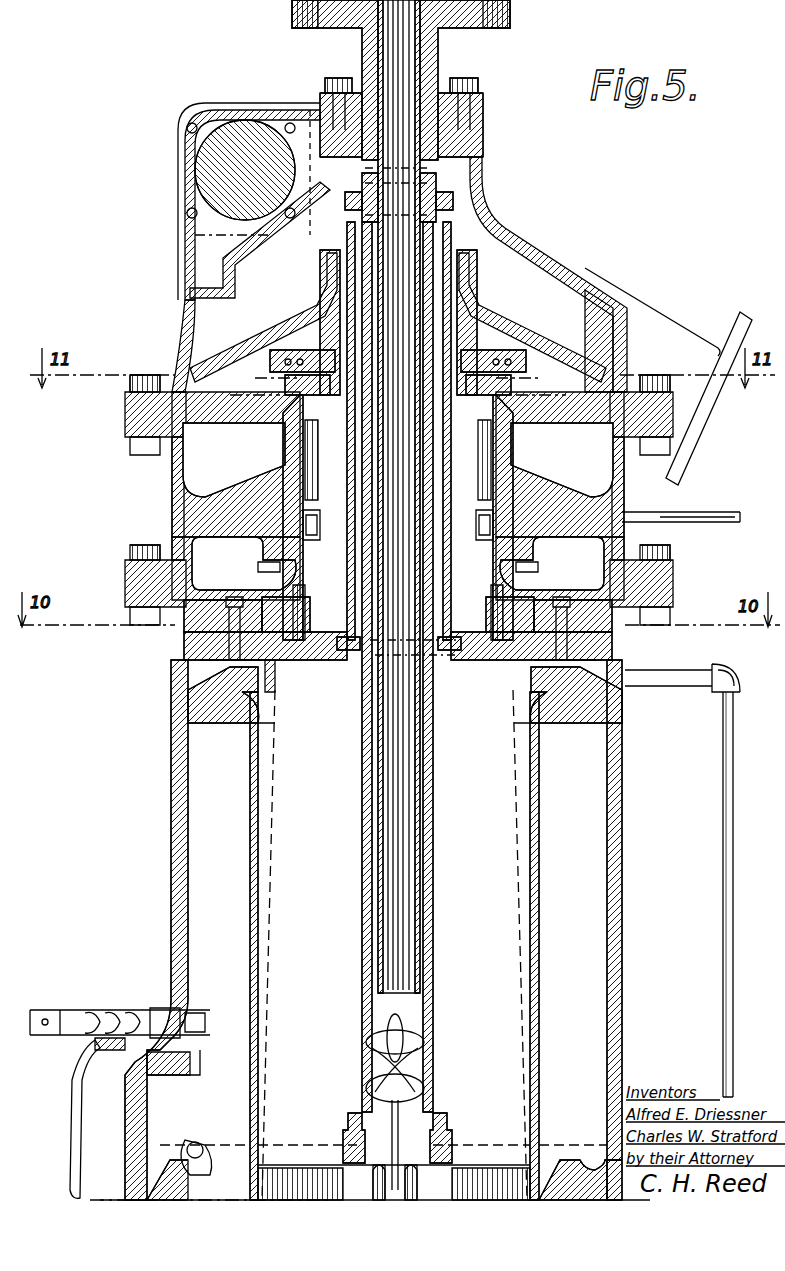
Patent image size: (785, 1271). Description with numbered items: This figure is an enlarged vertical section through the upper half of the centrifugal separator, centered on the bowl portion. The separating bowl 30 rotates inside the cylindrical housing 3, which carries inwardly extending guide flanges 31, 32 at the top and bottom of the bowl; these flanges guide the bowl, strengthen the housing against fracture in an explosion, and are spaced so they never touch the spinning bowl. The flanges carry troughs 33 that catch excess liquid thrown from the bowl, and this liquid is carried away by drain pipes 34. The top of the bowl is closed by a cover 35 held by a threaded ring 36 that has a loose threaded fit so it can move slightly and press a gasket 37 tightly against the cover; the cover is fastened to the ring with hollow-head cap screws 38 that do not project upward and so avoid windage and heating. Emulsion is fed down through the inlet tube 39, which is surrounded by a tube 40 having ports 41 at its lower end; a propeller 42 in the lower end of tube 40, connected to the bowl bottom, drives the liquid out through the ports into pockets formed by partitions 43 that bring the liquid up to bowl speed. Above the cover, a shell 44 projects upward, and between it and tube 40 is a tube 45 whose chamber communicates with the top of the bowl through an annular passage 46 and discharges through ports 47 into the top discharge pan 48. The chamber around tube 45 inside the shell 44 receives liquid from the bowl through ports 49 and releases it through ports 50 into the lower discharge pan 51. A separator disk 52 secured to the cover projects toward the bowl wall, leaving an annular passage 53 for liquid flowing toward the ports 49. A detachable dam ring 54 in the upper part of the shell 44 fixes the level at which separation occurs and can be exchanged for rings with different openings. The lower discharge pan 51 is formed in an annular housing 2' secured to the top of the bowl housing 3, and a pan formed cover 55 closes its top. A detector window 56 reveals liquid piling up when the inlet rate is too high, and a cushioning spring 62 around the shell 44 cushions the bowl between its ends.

The annular housing 2' is at (368, 498).
The housing 3 is at (172, 860).
The separating bowl 30 is at (245, 826).
The guide flange 31 is at (255, 668).
The guide flange 32 is at (578, 1160).
The trough 33 is at (232, 650).
The drain pipe 34 is at (733, 995).
The cover 35 is at (262, 600).
The threaded ring 36 is at (235, 642).
The gasket 37 is at (660, 580).
The hollow-head cap screw 38 is at (670, 550).
The inlet tube 39 is at (412, 47).
The tube 40 is at (362, 276).
The port 41 is at (378, 1165).
The propeller 42 is at (418, 1040).
The partition 43 is at (460, 1170).
The shell 44 is at (500, 415).
The tube 45 is at (345, 485).
The annular passage 46 is at (470, 640).
The port 47 is at (452, 215).
The top discharge pan 48 is at (548, 238).
The port 49 is at (482, 630).
The port 50 is at (322, 348).
The lower discharge pan 51 is at (398, 464).
The separator disk 52 is at (240, 695).
The annular passage 53 is at (270, 632).
The dam ring 54 is at (300, 418).
The pan formed cover 55 is at (190, 380).
The detector window 56 is at (249, 201).
The cushioning spring 62 is at (295, 515).